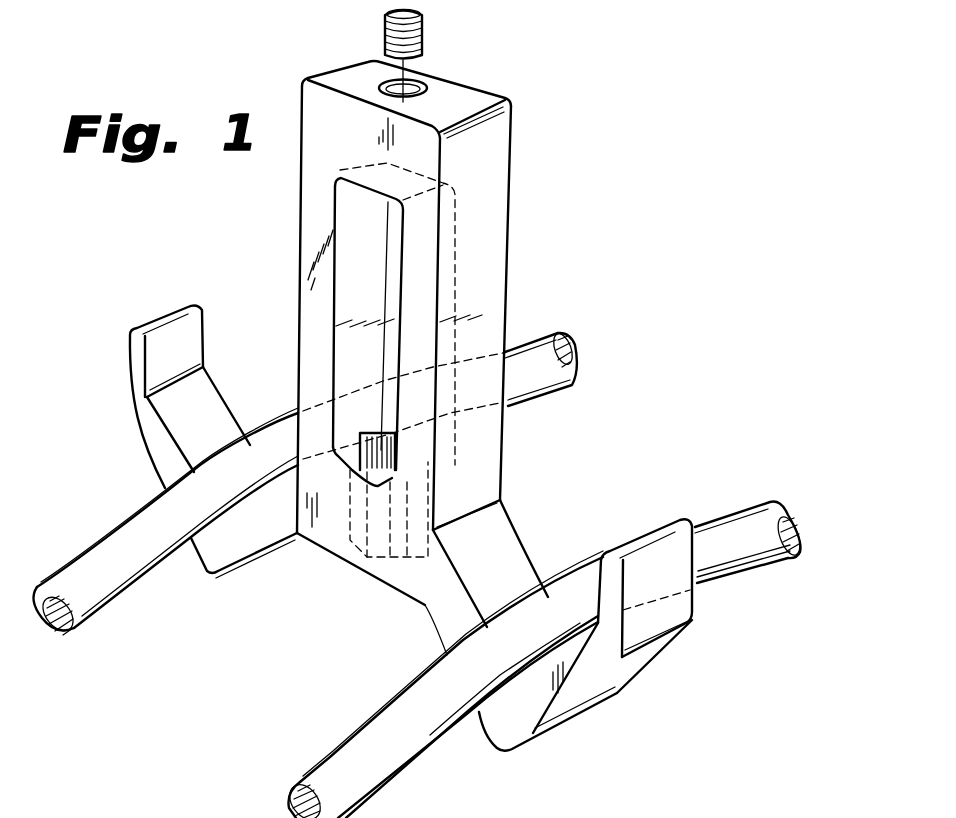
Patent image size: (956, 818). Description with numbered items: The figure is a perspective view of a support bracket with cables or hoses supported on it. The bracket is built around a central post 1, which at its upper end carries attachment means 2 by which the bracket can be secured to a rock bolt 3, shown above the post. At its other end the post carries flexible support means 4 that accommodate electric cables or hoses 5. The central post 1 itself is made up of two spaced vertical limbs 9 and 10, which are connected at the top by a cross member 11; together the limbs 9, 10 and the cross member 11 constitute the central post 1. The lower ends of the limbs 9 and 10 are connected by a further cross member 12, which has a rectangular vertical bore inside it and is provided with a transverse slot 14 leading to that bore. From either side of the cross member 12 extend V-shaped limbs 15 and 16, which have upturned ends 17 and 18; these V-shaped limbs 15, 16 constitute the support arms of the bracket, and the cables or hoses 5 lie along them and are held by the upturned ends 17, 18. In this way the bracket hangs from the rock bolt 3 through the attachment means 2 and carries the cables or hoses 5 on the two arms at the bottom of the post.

The central post 1 is at (541, 214).
The attachment means 2 is at (467, 72).
The rock bolt 3 is at (424, 26).
The flexible support means 4 is at (193, 590).
The electric cables or hoses 5 is at (543, 378).
The vertical limb 9 is at (305, 285).
The vertical limb 10 is at (505, 268).
The cross member 11 is at (466, 100).
The cross member 12 is at (357, 573).
The transverse slot 14 is at (366, 444).
The V-shaped limb 15 is at (134, 445).
The V-shaped limb 16 is at (493, 757).
The upturned end 17 is at (133, 355).
The upturned end 18 is at (610, 583).